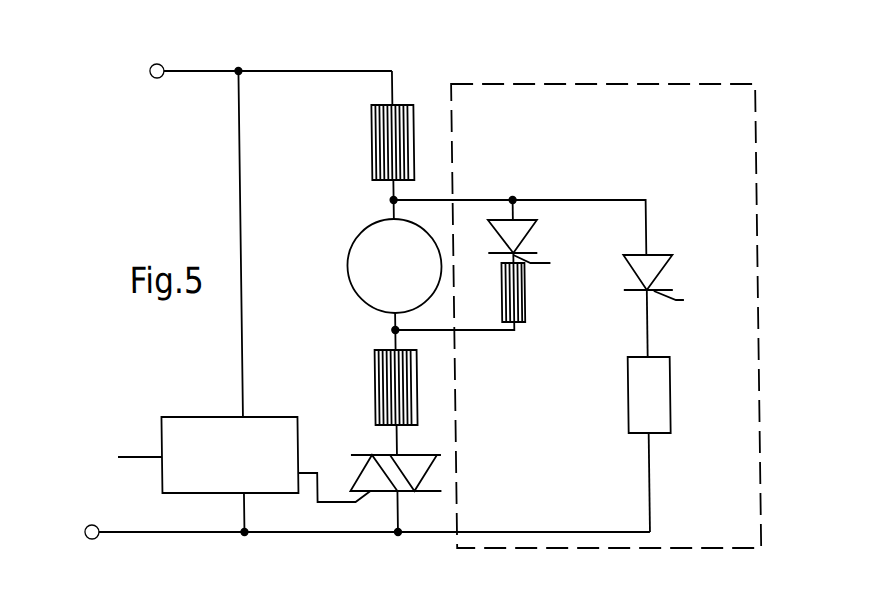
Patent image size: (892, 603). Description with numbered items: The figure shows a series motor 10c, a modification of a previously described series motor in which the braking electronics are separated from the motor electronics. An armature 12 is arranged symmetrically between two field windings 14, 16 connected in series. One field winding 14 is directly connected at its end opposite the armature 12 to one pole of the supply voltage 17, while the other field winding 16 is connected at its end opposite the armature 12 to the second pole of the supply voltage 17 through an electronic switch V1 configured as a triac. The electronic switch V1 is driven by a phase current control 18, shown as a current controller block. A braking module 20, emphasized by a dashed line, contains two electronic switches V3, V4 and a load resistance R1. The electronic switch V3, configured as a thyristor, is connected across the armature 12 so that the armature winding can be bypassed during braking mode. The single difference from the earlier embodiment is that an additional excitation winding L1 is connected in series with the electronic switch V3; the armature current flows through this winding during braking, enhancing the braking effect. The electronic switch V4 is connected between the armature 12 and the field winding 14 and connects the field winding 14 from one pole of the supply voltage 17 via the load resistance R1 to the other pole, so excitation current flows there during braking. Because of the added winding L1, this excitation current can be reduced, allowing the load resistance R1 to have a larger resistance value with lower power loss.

The series motor 10c is at (120, 130).
The supply voltage 17 is at (156, 78).
The field winding 14 is at (378, 150).
The armature 12 is at (356, 272).
The field winding 16 is at (382, 383).
The phase current control 18 is at (176, 441).
The braking module 20 is at (728, 145).
The electronic switch V1 is at (409, 466).
The electronic switch V3 is at (517, 238).
The additional excitation winding L1 is at (521, 297).
The electronic switch V4 is at (652, 272).
The load resistance R1 is at (650, 400).